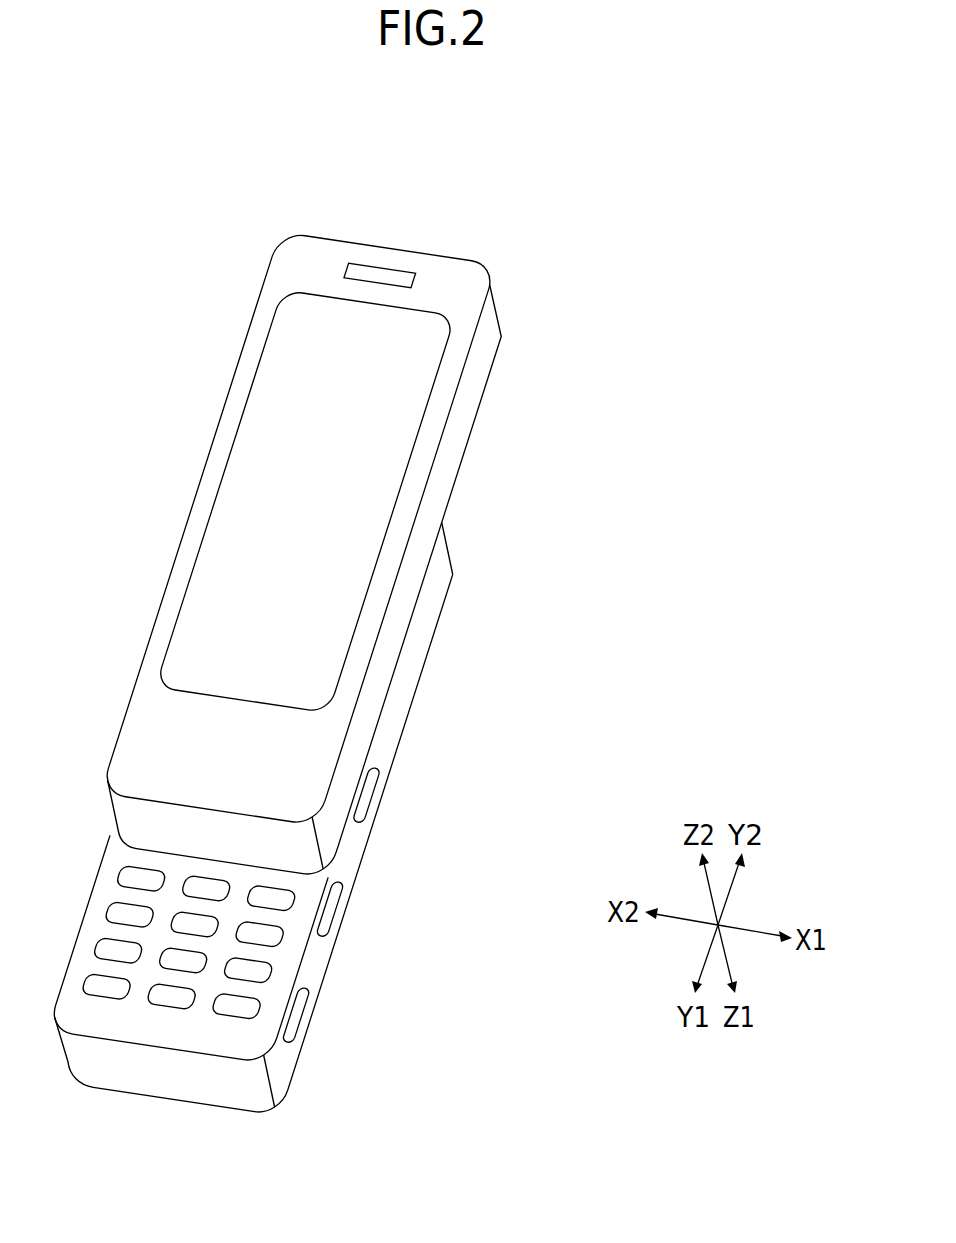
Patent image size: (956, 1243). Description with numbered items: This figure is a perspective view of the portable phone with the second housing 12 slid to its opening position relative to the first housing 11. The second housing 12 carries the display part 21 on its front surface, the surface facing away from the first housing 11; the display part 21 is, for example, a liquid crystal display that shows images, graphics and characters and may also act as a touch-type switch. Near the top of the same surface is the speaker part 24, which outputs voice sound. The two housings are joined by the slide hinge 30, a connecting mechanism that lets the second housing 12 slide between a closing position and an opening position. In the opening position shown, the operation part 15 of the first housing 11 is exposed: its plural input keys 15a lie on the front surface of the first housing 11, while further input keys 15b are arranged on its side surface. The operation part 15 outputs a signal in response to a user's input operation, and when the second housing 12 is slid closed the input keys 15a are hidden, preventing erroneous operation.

The first housing 11 is at (410, 678).
The second housing 12 is at (473, 378).
The operation part 15 is at (272, 998).
The input keys 15a is at (268, 938).
The input keys 15b is at (333, 905).
The display part 21 is at (228, 500).
The speaker part 24 is at (388, 276).
The slide hinge 30 is at (390, 737).